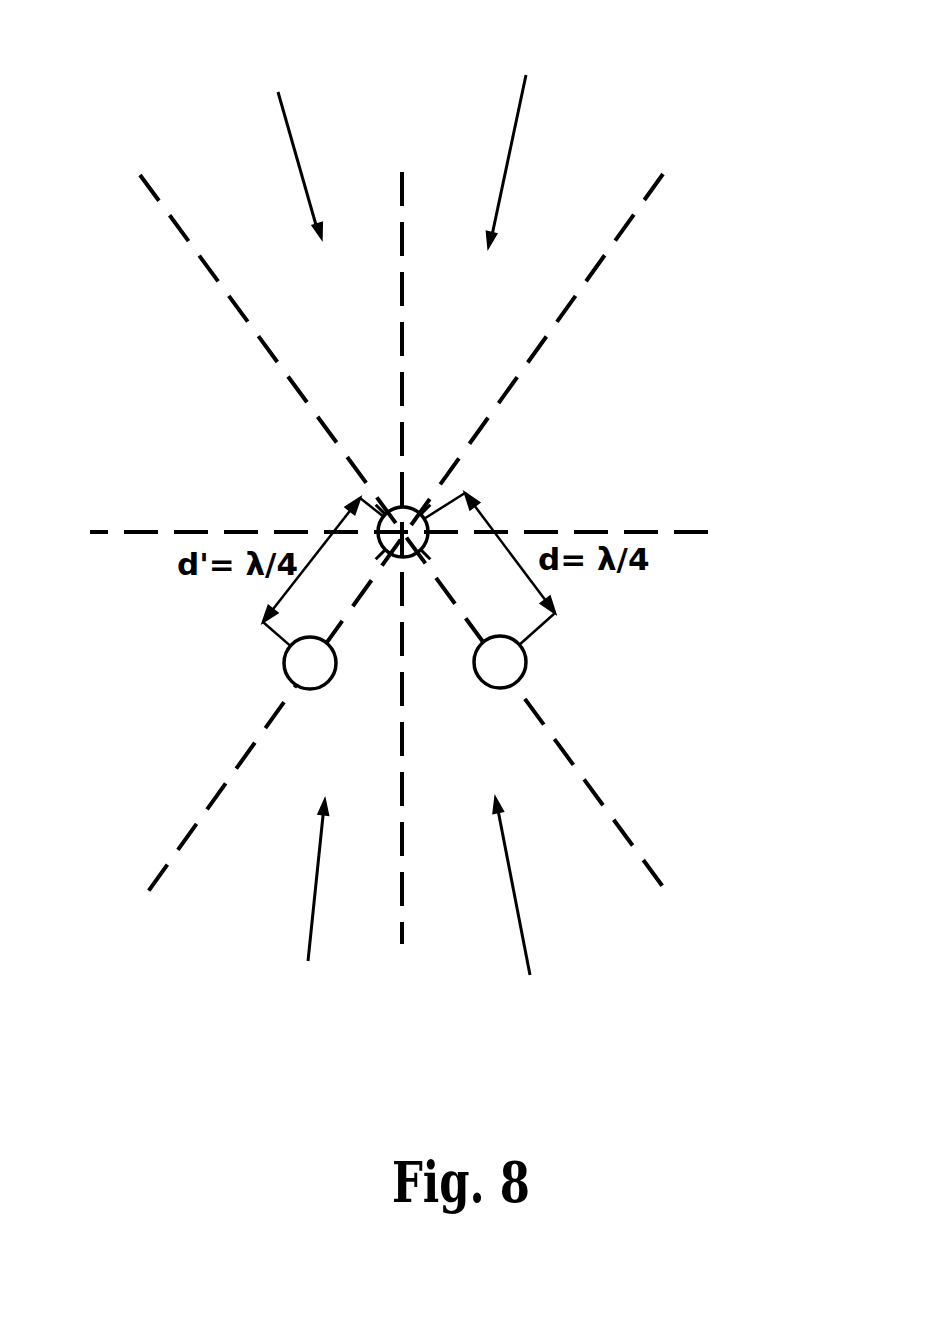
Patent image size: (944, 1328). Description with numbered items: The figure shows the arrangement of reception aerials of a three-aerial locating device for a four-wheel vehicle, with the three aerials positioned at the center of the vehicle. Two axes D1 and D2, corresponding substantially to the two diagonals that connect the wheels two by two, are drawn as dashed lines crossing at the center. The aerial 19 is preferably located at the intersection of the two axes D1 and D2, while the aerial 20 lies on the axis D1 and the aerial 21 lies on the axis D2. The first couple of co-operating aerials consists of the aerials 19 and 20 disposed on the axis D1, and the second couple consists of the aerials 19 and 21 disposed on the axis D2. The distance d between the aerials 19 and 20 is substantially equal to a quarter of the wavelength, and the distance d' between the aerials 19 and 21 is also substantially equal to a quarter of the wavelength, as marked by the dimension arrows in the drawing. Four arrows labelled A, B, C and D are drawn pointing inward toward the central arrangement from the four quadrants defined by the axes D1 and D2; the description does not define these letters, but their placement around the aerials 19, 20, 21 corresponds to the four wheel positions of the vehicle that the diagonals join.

The aerial 19 is at (408, 530).
The aerial 20 is at (514, 668).
The aerial 21 is at (296, 667).
The incoming signal direction A is at (290, 133).
The incoming signal direction B is at (513, 137).
The incoming signal direction C is at (307, 908).
The incoming signal direction D is at (524, 918).
The axis D1 is at (248, 322).
The axis D2 is at (571, 306).